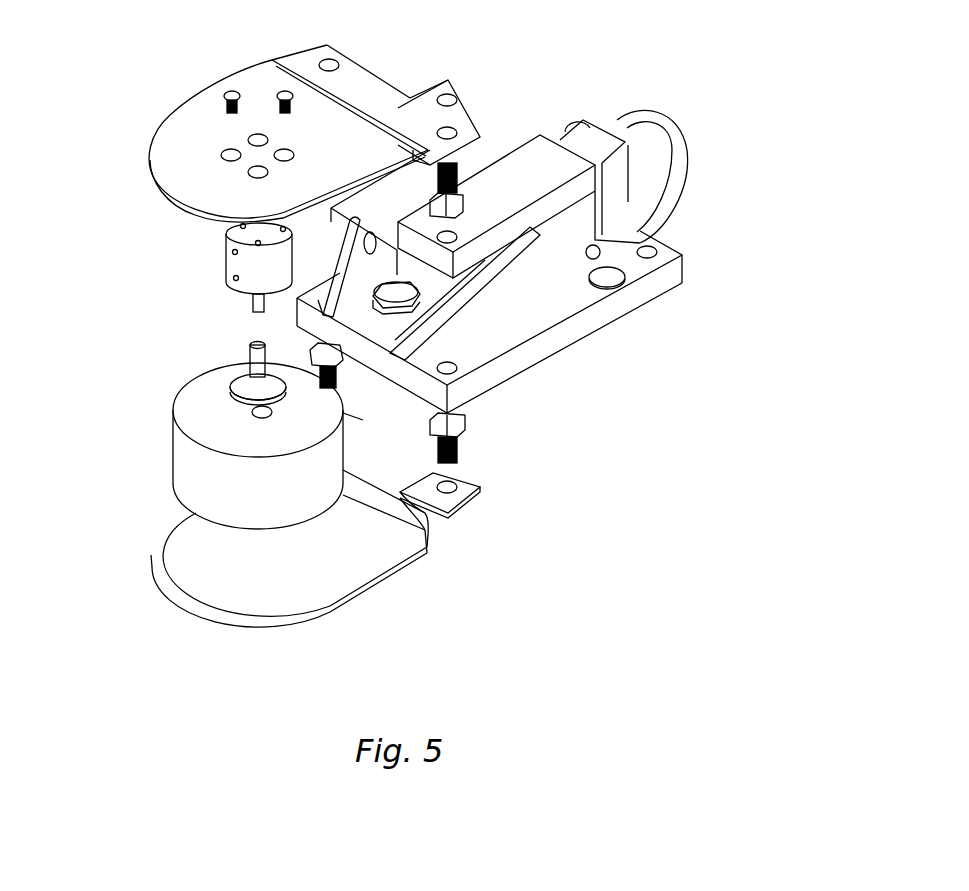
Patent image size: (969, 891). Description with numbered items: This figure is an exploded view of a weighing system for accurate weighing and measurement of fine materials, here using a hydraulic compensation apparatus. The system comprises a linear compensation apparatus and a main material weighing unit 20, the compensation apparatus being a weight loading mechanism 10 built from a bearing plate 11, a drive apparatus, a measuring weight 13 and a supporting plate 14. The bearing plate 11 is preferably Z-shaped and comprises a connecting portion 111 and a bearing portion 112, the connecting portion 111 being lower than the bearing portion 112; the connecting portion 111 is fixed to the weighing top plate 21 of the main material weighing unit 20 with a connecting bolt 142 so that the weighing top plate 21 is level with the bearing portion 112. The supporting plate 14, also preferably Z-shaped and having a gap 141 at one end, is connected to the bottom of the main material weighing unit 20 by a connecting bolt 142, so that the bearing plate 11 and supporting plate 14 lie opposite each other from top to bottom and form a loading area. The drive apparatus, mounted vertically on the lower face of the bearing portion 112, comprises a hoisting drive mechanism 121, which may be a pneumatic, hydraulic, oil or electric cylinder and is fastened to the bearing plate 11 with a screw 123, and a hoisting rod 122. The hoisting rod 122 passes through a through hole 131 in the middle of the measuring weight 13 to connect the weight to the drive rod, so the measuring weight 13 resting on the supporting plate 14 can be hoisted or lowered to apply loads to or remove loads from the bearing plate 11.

The weight loading mechanism 10 is at (112, 206).
The bearing plate 11 is at (386, 118).
The measuring weight 13 is at (226, 476).
The supporting plate 14 is at (432, 493).
The main material weighing unit 20 is at (566, 92).
The weighing top plate 21 is at (485, 270).
The connecting portion 111 is at (364, 73).
The bearing portion 112 is at (205, 118).
The hoisting drive mechanism 121 is at (226, 226).
The hoisting rod 122 is at (248, 372).
The screw 123 is at (227, 95).
The through hole 131 is at (236, 413).
The gap 141 is at (392, 485).
The connecting bolt 142 is at (457, 187).